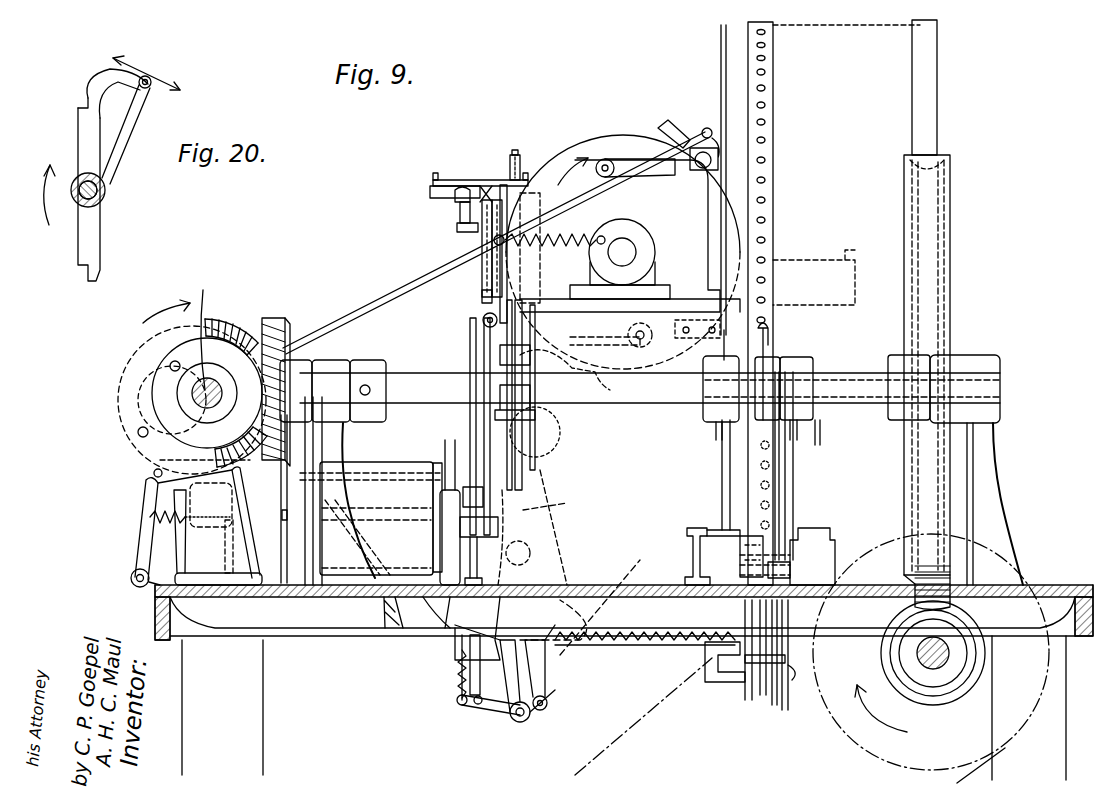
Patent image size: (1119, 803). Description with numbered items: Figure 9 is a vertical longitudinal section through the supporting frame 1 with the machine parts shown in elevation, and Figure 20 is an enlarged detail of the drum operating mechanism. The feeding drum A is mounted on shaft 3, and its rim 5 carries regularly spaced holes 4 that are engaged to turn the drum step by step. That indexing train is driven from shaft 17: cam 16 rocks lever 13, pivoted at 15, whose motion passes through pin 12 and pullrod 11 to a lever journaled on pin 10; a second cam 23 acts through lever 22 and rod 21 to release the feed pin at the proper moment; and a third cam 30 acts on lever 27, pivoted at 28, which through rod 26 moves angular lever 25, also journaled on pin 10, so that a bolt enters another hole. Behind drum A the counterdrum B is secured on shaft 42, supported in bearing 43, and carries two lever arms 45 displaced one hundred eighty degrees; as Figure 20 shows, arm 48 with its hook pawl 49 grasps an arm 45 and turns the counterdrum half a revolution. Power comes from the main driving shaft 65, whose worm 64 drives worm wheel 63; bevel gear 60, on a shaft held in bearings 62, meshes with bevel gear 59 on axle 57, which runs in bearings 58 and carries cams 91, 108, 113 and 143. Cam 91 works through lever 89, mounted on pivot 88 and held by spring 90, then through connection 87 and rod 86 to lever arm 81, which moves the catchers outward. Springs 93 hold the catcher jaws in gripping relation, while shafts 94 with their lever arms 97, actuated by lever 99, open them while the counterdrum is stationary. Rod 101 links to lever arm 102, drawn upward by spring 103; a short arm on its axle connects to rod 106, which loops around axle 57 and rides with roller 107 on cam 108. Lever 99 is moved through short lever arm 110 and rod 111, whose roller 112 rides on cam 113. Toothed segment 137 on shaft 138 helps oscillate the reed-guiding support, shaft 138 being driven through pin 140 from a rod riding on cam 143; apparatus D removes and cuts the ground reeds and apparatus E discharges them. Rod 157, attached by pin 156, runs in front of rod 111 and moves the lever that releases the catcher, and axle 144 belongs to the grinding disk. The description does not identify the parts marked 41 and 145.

In FIG. 9, the supporting frame 1 is at (325, 615).
In FIG. 9, the shaft 3 is at (740, 300).
In FIG. 9, the holes 4 is at (764, 118).
In FIG. 9, the rim 5 is at (770, 58).
In FIG. 9, the pin 10 is at (796, 678).
In FIG. 9, the pullrod 11 is at (762, 695).
In FIG. 9, the pin 12 is at (750, 680).
In FIG. 9, the lever 13 is at (780, 482).
In FIG. 9, the pivot 15 is at (683, 540).
In FIG. 9, the cam 16 is at (766, 345).
In FIG. 9, the shaft 17 is at (418, 385).
In FIG. 9, the rod 21 is at (725, 648).
In FIG. 9, the lever 22 is at (724, 465).
In FIG. 9, the second cam 23 is at (716, 432).
In FIG. 9, the angular lever 25 is at (786, 710).
In FIG. 9, the rod 26 is at (774, 706).
In FIG. 9, the lever 27 is at (795, 518).
In FIG. 9, the pivot 28 is at (840, 540).
In FIG. 9, the third cam 30 is at (802, 433).
In FIG. 9, the guide rod 41 is at (718, 38).
In FIG. 20, the shaft 42 is at (108, 192).
In FIG. 9, the shaft 42 is at (627, 245).
In FIG. 9, the bearing 43 is at (645, 258).
In FIG. 20, the lever arms 45 is at (86, 126).
In FIG. 20, the arm 48 is at (122, 140).
In FIG. 20, the hook pawl 49 is at (102, 76).
In FIG. 9, the axle 57 is at (202, 356).
In FIG. 9, the bearings 58 is at (182, 558).
In FIG. 9, the bevel gear wheel 59 is at (226, 324).
In FIG. 9, the bevel gear wheel 60 is at (285, 320).
In FIG. 9, the bearings 62 is at (1002, 532).
In FIG. 9, the worm wheel 63 is at (932, 193).
In FIG. 9, the worm 64 is at (923, 676).
In FIG. 9, the main driving shaft 65 is at (941, 670).
In FIG. 9, the lever arm 81 is at (482, 310).
In FIG. 9, the rod 86 is at (258, 478).
In FIG. 9, the connection 87 is at (156, 482).
In FIG. 9, the pivot 88 is at (132, 577).
In FIG. 9, the lever 89 is at (140, 546).
In FIG. 9, the spring 90 is at (219, 546).
In FIG. 9, the cam 91 is at (160, 450).
In FIG. 9, the springs 93 is at (583, 340).
In FIG. 9, the shafts 94 is at (652, 338).
In FIG. 9, the lever arms 97 is at (626, 160).
In FIG. 9, the lever 99 is at (668, 122).
In FIG. 9, the rod 101 is at (466, 706).
In FIG. 9, the lever arm 102 is at (500, 710).
In FIG. 9, the spring 103 is at (458, 678).
In FIG. 9, the rod 106 is at (538, 700).
In FIG. 9, the roller 107 is at (152, 350).
In FIG. 9, the cam 108 is at (152, 474).
In FIG. 9, the short lever arm 110 is at (710, 128).
In FIG. 9, the rod 111 is at (573, 175).
In FIG. 9, the roller 112 is at (137, 432).
In FIG. 9, the cam 113 is at (152, 385).
In FIG. 9, the toothed segment 137 is at (555, 484).
In FIG. 9, the shaft 138 is at (530, 553).
In FIG. 9, the pin 140 is at (462, 655).
In FIG. 9, the cam 143 is at (208, 477).
In FIG. 9, the axle 144 is at (582, 606).
In FIG. 9, the spring 145 is at (640, 632).
In FIG. 9, the pin 156 is at (494, 240).
In FIG. 9, the rod 157 is at (412, 288).
In FIG. 9, the feeding drum A is at (902, 80).
In FIG. 9, the counterdrum B is at (572, 150).
In FIG. 9, the removing and cutting apparatus D is at (484, 182).
In FIG. 9, the discharging apparatus E is at (385, 465).